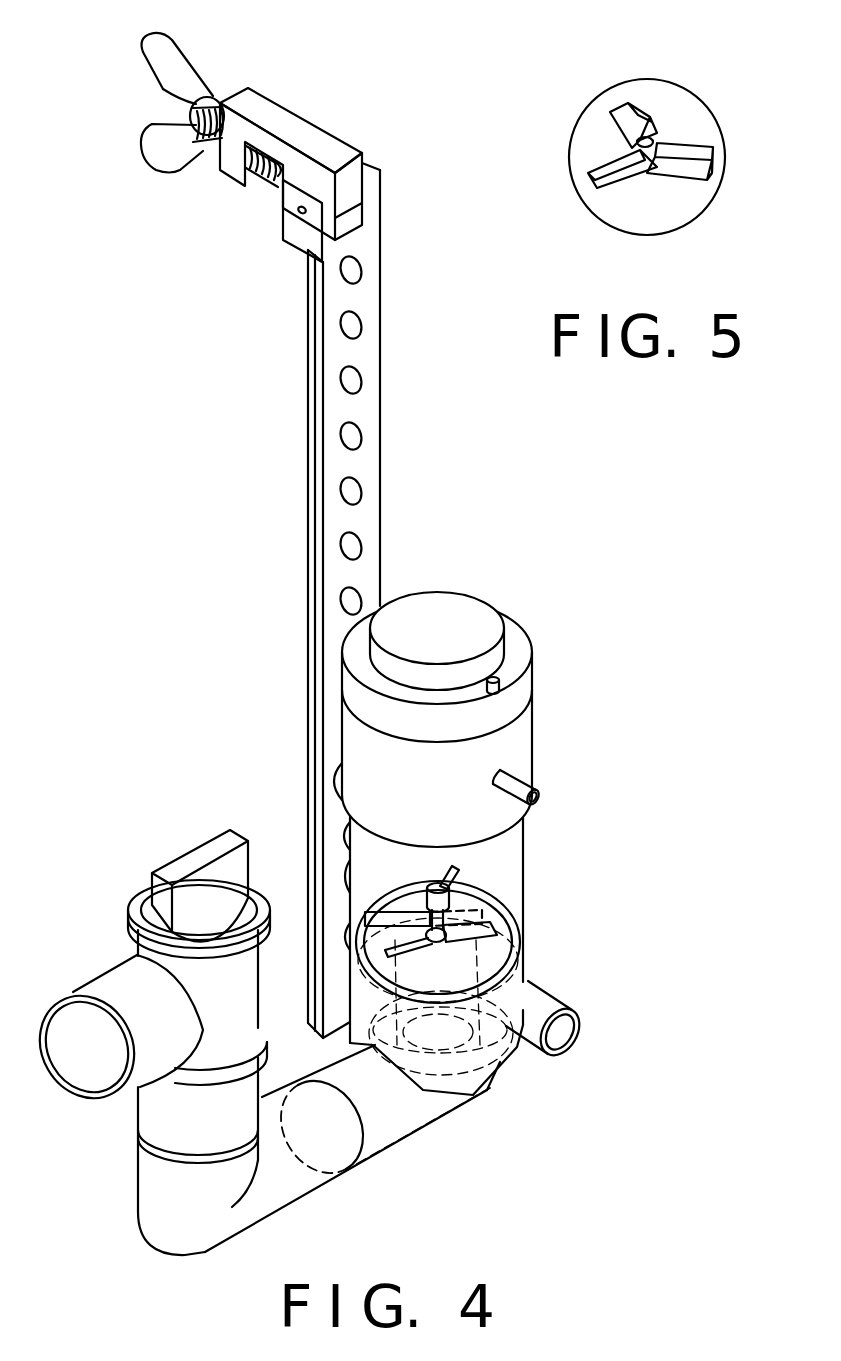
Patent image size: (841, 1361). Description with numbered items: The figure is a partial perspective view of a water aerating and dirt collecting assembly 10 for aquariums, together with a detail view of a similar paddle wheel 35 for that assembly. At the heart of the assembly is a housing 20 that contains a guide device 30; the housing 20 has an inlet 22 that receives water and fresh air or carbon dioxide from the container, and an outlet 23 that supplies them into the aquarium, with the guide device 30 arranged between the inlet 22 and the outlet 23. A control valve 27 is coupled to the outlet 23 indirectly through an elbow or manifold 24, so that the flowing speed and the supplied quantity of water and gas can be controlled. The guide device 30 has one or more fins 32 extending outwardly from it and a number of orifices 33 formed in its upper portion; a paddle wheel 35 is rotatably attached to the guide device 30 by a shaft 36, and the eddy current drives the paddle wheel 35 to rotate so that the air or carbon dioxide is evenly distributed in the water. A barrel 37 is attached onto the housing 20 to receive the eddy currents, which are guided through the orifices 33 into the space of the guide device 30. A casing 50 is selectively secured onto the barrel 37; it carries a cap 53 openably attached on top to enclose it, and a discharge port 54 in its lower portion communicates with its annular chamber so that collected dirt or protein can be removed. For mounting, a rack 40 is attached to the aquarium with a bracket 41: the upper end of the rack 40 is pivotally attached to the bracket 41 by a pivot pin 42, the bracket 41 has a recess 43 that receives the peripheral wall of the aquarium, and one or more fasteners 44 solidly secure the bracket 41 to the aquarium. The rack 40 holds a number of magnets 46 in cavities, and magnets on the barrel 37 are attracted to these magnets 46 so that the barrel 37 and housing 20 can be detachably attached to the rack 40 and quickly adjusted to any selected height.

In FIG. 4, the water aerating and dirt collecting assembly 10 is at (545, 611).
In FIG. 4, the housing 20 is at (513, 1064).
In FIG. 4, the inlet 22 is at (578, 1063).
In FIG. 4, the outlet 23 is at (413, 1140).
In FIG. 4, the elbow or manifold 24 is at (148, 1190).
In FIG. 4, the control valve 27 is at (212, 992).
In FIG. 4, the guide device 30 is at (512, 1000).
In FIG. 4, the fins 32 is at (517, 976).
In FIG. 4, the orifices 33 is at (440, 952).
In FIG. 5, the paddle wheel 35 is at (680, 160).
In FIG. 4, the paddle wheel 35 is at (475, 910).
In FIG. 4, the shaft 36 is at (462, 880).
In FIG. 4, the barrel 37 is at (525, 842).
In FIG. 4, the rack 40 is at (304, 516).
In FIG. 4, the bracket 41 is at (308, 132).
In FIG. 4, the pivot pin 42 is at (300, 215).
In FIG. 4, the recess 43 is at (273, 188).
In FIG. 4, the fasteners 44 is at (213, 145).
In FIG. 4, the magnets 46 is at (360, 270).
In FIG. 4, the casing 50 is at (526, 735).
In FIG. 4, the cap 53 is at (440, 605).
In FIG. 4, the discharge port 54 is at (541, 800).